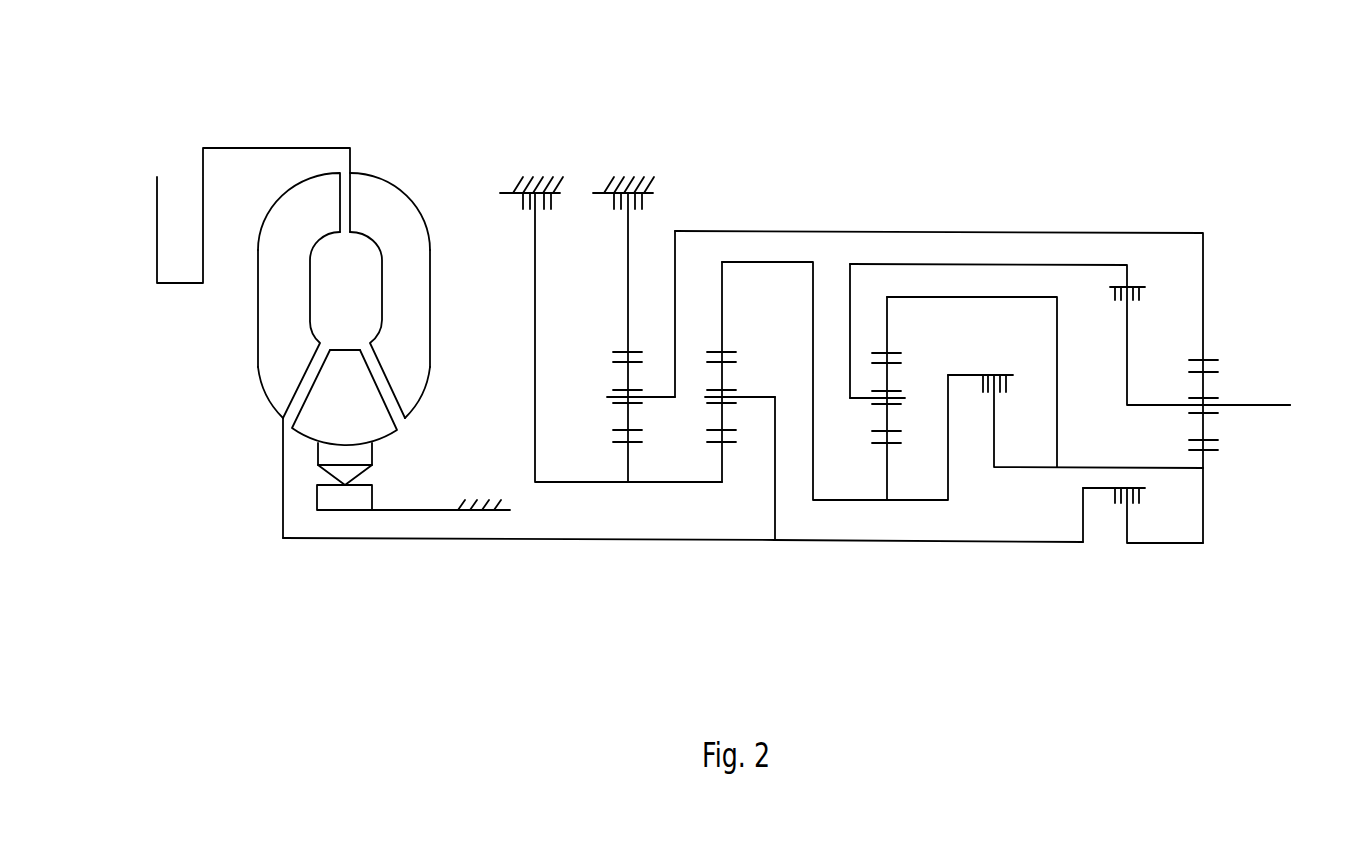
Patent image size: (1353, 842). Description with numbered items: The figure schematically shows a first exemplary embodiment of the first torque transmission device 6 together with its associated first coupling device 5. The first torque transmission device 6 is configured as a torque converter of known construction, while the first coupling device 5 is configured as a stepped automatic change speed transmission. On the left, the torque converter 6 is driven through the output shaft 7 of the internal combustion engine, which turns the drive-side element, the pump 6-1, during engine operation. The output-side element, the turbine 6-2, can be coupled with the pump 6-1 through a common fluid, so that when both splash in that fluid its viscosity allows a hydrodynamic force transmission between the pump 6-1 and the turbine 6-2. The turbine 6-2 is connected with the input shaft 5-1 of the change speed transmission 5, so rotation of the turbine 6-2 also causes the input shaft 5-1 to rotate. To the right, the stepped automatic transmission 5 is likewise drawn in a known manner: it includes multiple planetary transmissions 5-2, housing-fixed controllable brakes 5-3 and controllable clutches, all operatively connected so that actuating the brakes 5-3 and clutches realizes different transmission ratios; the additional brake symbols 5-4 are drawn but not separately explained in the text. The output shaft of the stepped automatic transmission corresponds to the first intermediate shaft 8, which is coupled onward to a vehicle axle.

The first coupling device 5 is at (796, 338).
The input shaft 5-1 is at (550, 542).
The planetary transmissions 5-2 is at (617, 340).
The housing-fixed controllable brakes and clutches 5-3 is at (540, 153).
The brake 5-4 is at (988, 400).
The first torque transmission device 6 is at (308, 355).
The pump 6-1 is at (417, 285).
The turbine 6-2 is at (277, 318).
The output shaft 7 is at (157, 228).
The first intermediate shaft 8 is at (1262, 408).